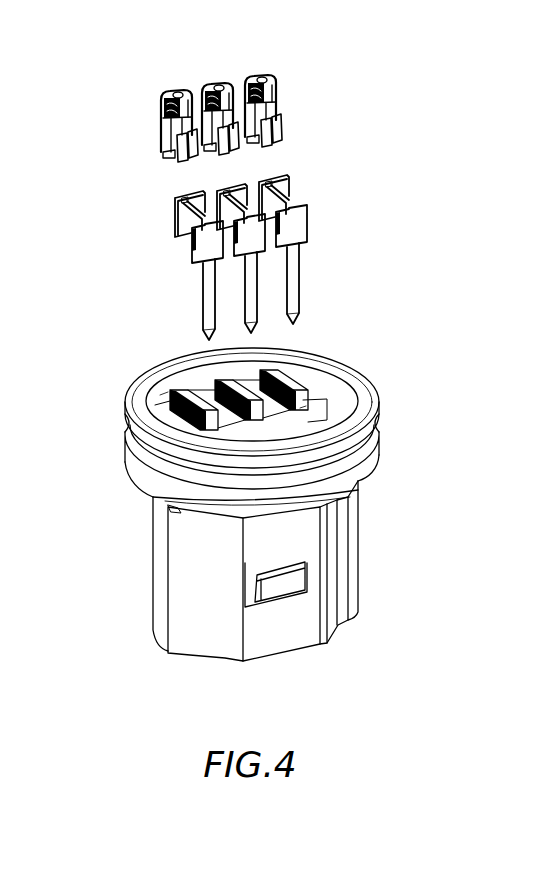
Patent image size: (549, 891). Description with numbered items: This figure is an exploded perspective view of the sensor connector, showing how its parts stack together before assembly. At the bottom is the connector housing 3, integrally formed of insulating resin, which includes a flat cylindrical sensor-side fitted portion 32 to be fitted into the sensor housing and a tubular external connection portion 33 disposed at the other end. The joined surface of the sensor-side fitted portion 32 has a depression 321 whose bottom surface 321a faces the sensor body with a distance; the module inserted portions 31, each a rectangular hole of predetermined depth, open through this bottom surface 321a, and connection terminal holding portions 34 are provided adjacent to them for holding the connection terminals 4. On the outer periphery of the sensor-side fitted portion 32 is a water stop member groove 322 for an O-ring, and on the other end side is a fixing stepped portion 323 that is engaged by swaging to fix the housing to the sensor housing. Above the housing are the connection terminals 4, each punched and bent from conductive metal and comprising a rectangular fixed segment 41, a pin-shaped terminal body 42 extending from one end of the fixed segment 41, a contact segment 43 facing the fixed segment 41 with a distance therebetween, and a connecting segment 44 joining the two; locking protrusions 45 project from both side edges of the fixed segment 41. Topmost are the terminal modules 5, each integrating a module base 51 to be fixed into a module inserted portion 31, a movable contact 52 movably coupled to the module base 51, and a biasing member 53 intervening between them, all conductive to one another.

The connector housing 3 is at (433, 416).
The module inserted portion 31 is at (198, 388).
The sensor-side fitted portion 32 is at (293, 542).
The depression 321 is at (340, 405).
The bottom surface 321a is at (327, 427).
The water stop member groove 322 is at (135, 433).
The fixing stepped portion 323 is at (141, 480).
The external connection portion 33 is at (358, 527).
The connection terminal holding portion 34 is at (157, 393).
The connection terminal 4 is at (251, 242).
The fixed segment 41 is at (192, 233).
The terminal body 42 is at (203, 283).
The contact segment 43 is at (180, 204).
The connecting segment 44 is at (175, 196).
The locking protrusion 45 is at (193, 241).
The terminal module 5 is at (248, 81).
The module base 51 is at (283, 107).
The movable contact 52 is at (286, 100).
The biasing member 53 is at (243, 76).